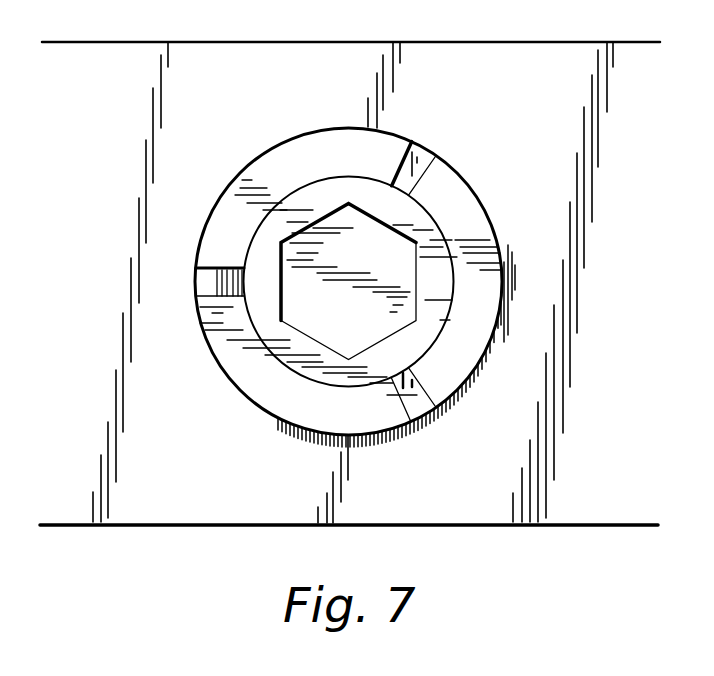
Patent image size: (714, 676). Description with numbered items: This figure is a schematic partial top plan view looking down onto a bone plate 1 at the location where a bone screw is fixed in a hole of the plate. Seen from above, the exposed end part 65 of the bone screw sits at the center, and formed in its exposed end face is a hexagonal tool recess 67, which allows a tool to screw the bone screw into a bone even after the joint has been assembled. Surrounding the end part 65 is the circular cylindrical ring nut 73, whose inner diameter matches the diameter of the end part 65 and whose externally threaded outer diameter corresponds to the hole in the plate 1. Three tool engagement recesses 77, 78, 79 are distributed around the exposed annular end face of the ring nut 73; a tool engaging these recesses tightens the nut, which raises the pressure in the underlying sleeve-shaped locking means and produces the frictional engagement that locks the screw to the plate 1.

The plate 1 is at (177, 493).
The end part 65 is at (437, 282).
The hexagonal tool recess 67 is at (323, 283).
The ring nut 73 is at (457, 198).
The tool engagement recess 77 is at (205, 283).
The tool engagement recess 78 is at (425, 147).
The tool engagement recess 79 is at (418, 405).